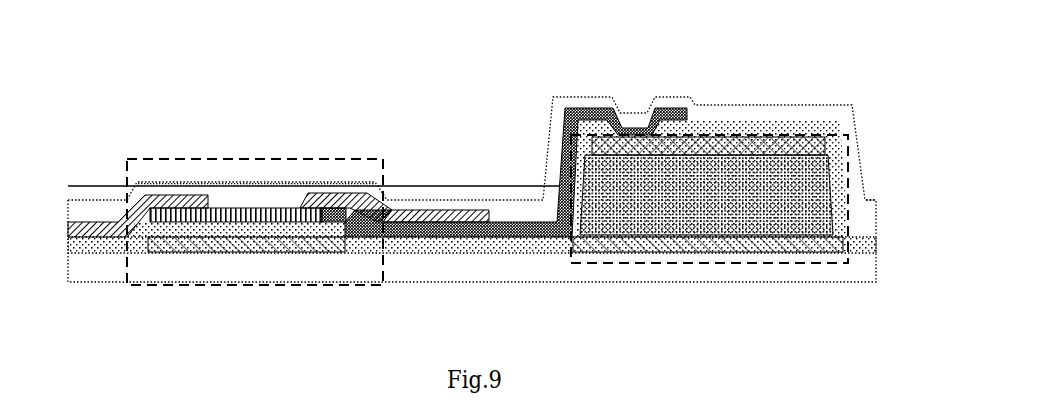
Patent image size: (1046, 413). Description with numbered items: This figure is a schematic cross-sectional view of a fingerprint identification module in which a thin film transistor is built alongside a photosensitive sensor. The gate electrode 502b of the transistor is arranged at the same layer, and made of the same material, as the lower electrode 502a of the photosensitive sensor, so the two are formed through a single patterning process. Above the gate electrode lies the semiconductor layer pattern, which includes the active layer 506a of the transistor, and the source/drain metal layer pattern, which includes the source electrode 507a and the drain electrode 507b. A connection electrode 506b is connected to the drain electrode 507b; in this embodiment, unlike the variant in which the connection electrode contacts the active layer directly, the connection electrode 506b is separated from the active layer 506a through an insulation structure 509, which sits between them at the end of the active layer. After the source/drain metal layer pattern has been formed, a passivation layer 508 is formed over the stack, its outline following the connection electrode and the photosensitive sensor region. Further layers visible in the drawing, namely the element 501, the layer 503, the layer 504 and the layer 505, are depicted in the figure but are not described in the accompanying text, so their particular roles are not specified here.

The base substrate 501 is at (700, 262).
The lower electrode 502a is at (650, 243).
The gate electrode 502b is at (255, 245).
The photoelectric conversion layer 503 is at (815, 208).
The transparent electrode 504 is at (817, 150).
The insulating layer 505 is at (328, 228).
The active layer 506a is at (260, 212).
The connection electrode 506b is at (505, 228).
The source electrode 507a is at (158, 195).
The drain electrode 507b is at (415, 217).
The passivation layer 508 is at (708, 112).
The insulation structure 509 is at (330, 218).